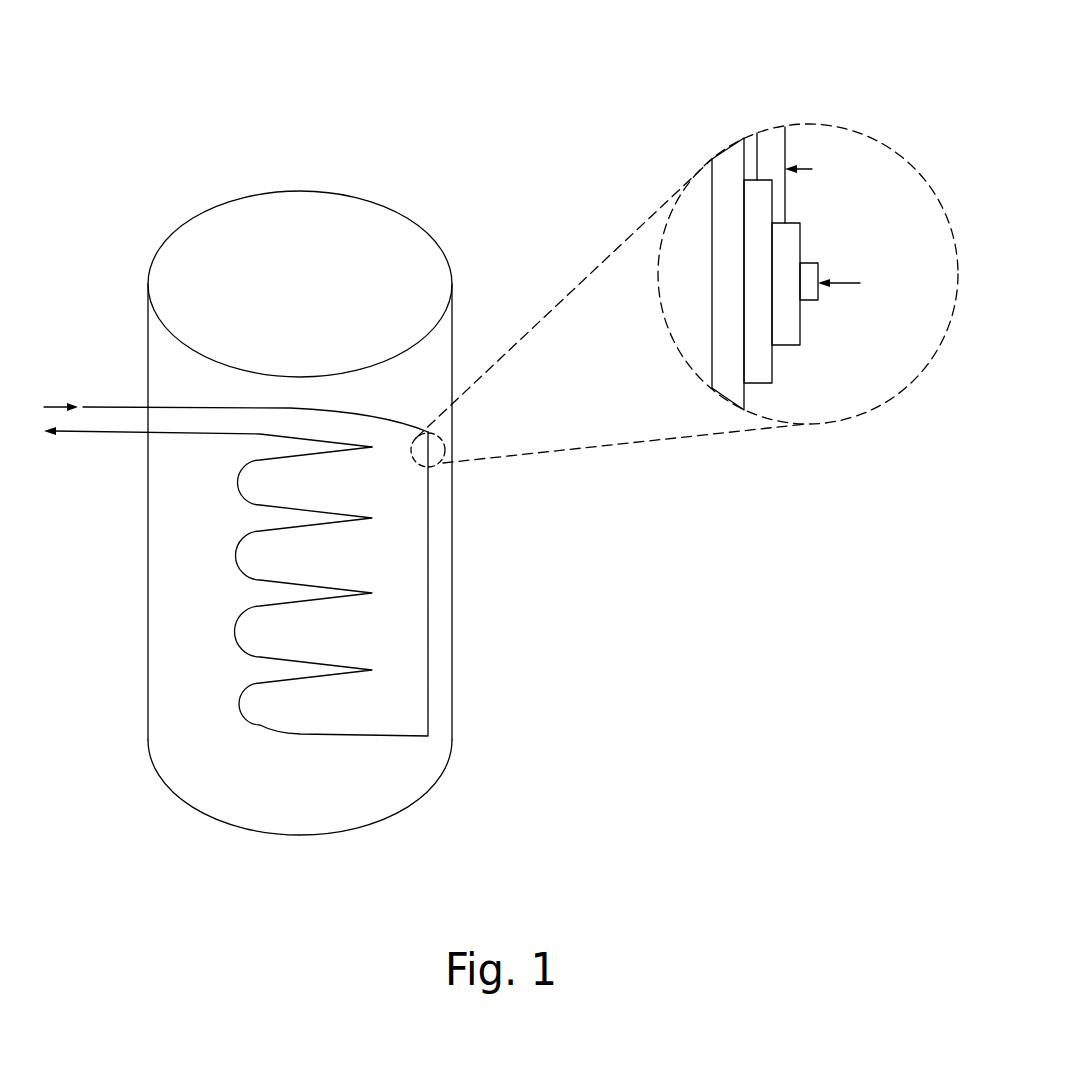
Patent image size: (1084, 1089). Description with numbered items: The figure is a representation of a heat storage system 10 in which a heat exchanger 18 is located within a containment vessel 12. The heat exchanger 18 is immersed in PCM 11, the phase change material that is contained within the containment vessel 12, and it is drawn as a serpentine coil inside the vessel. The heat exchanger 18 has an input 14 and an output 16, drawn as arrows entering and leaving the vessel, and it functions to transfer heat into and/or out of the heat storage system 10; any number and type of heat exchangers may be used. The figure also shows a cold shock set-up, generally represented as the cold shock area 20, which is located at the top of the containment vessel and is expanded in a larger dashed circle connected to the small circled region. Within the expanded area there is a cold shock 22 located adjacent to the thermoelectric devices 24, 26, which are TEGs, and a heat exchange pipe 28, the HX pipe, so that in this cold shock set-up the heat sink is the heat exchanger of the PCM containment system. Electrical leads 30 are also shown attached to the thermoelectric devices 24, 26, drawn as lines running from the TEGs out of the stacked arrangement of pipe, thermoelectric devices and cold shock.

The heat storage system 10 is at (321, 517).
The PCM 11 is at (183, 724).
The containment vessel 12 is at (453, 723).
The input 14 is at (236, 400).
The output 16 is at (208, 447).
The heat exchanger 18 is at (237, 553).
The cold shock area 20 is at (445, 450).
The cold shock 22 is at (868, 290).
The thermoelectric device 24 is at (788, 328).
The thermoelectric device 26 is at (758, 365).
The heat exchange pipe 28 is at (730, 162).
The electrical leads 30 is at (807, 165).